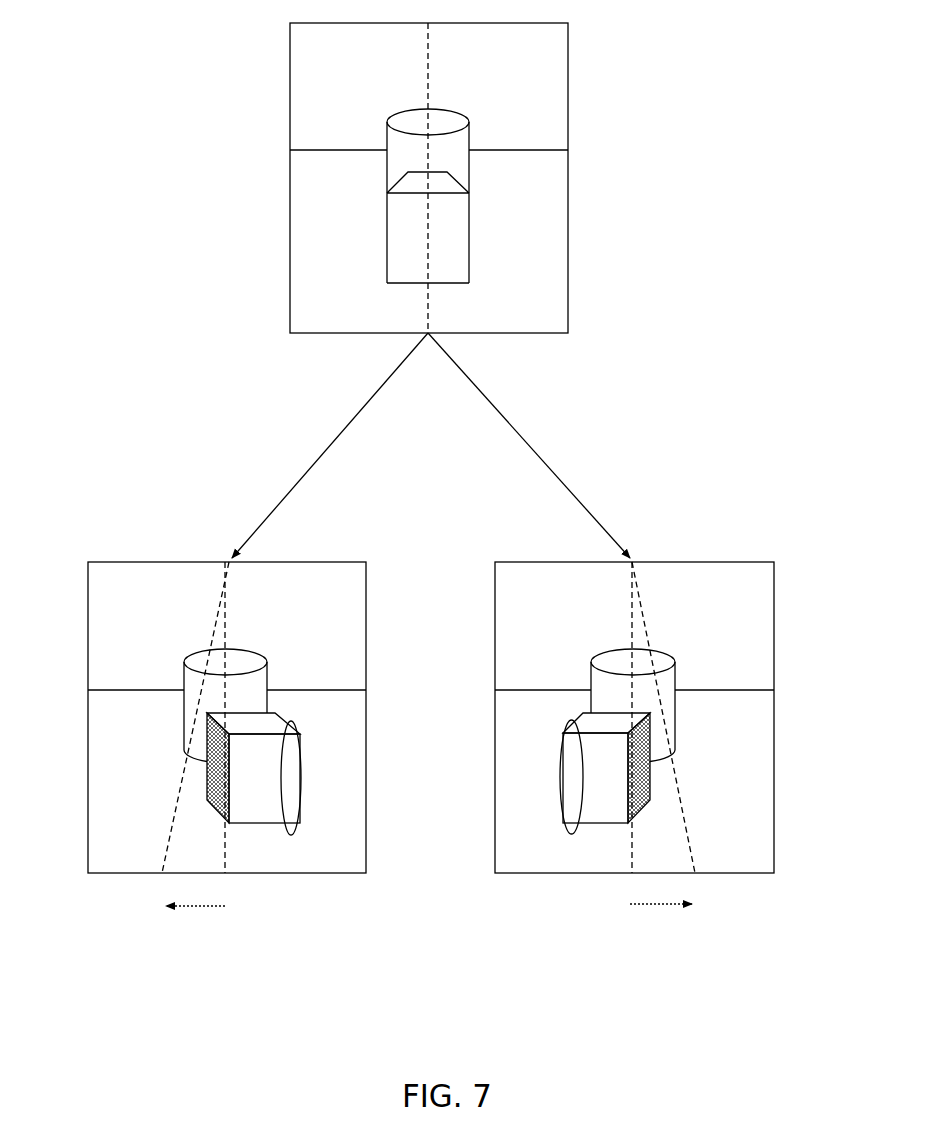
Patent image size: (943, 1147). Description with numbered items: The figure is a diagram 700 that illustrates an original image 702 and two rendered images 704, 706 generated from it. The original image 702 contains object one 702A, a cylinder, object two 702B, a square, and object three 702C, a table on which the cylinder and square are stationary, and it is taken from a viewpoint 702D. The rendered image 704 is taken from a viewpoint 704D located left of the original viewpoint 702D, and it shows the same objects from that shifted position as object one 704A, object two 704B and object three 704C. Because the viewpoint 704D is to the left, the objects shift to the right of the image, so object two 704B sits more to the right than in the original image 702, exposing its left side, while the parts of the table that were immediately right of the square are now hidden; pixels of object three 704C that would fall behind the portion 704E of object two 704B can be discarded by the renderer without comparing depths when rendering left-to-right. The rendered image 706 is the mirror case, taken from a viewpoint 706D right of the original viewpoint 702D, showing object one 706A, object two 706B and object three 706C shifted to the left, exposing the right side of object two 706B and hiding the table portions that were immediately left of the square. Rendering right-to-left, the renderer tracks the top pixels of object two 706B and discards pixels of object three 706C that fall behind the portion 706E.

The diagram 700 is at (753, 35).
The original image 702 is at (523, 55).
The object one 702A is at (455, 163).
The object two 702B is at (455, 240).
The object three 702C is at (560, 188).
The viewpoint 702D is at (428, 298).
The rendered image 704 is at (332, 595).
The object one 704A is at (253, 705).
The object two 704B is at (287, 785).
The object three 704C is at (355, 726).
The viewpoint 704D is at (167, 842).
The portion 704E is at (305, 785).
The rendered image 706 is at (738, 595).
The object one 706A is at (660, 705).
The object two 706B is at (623, 788).
The object three 706C is at (765, 728).
The viewpoint 706D is at (692, 845).
The portion 706E is at (555, 788).